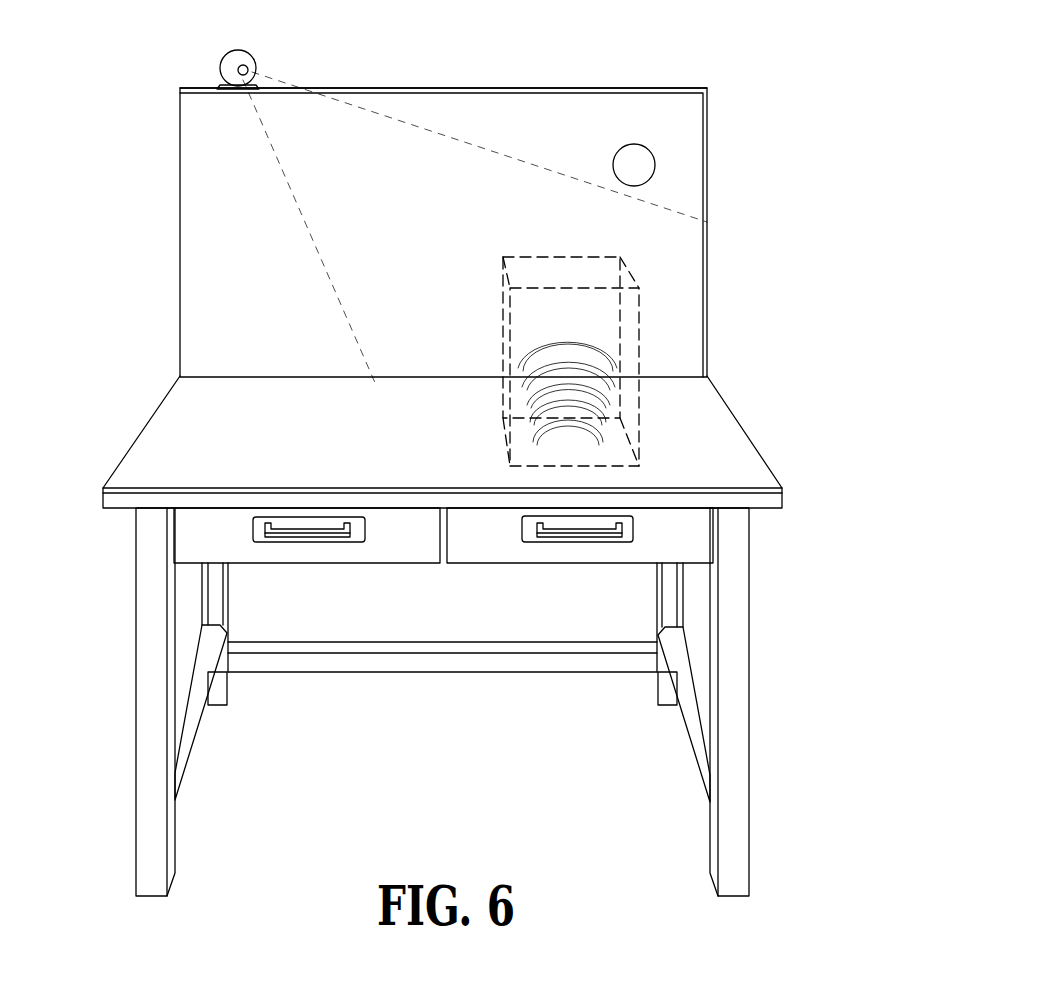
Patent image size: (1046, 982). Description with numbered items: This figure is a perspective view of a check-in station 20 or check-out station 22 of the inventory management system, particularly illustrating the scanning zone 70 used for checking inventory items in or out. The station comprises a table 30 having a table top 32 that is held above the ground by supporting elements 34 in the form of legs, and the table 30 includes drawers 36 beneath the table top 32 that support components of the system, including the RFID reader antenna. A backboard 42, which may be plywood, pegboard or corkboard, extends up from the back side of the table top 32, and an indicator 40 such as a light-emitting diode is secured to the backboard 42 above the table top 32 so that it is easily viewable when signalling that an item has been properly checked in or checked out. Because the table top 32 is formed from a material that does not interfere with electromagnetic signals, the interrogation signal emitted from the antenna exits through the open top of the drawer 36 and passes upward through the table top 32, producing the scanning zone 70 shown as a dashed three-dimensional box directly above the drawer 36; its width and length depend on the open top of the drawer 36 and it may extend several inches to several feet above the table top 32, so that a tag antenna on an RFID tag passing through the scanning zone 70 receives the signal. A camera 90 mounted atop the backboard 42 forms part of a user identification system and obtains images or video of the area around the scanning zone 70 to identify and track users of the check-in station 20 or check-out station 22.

The check-in station 20 is at (482, 456).
The check-out station 22 is at (482, 456).
The table 30 is at (423, 201).
The table top 32 is at (155, 430).
The supporting elements 34 is at (125, 673).
The drawers 36 is at (490, 550).
The indicator 40 is at (643, 167).
The backboard 42 is at (450, 110).
The scanning zone 70 is at (623, 318).
The camera 90 is at (233, 52).